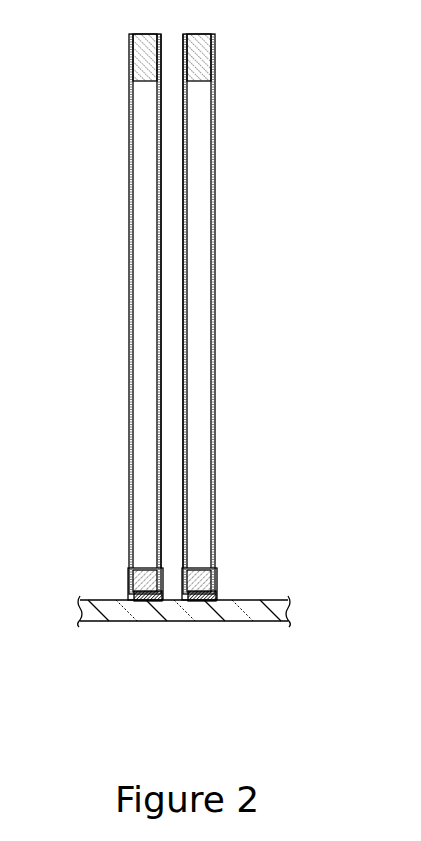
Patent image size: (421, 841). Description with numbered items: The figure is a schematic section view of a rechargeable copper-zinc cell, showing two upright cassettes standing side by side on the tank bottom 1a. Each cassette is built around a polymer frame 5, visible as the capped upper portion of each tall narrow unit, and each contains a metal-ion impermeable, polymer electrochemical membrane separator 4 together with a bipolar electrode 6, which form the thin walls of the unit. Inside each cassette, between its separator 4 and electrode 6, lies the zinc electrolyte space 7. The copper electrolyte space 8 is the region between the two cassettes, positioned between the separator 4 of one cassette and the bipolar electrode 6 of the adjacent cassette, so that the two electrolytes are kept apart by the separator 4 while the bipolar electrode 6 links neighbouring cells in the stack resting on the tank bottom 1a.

The tank bottom 1a is at (185, 621).
The electrochemical membrane separator 4 is at (160, 115).
The polymer frame 5 is at (145, 65).
The bipolar electrode 6 is at (133, 182).
The zinc electrolyte space 7 is at (146, 379).
The copper electrolyte space 8 is at (167, 425).